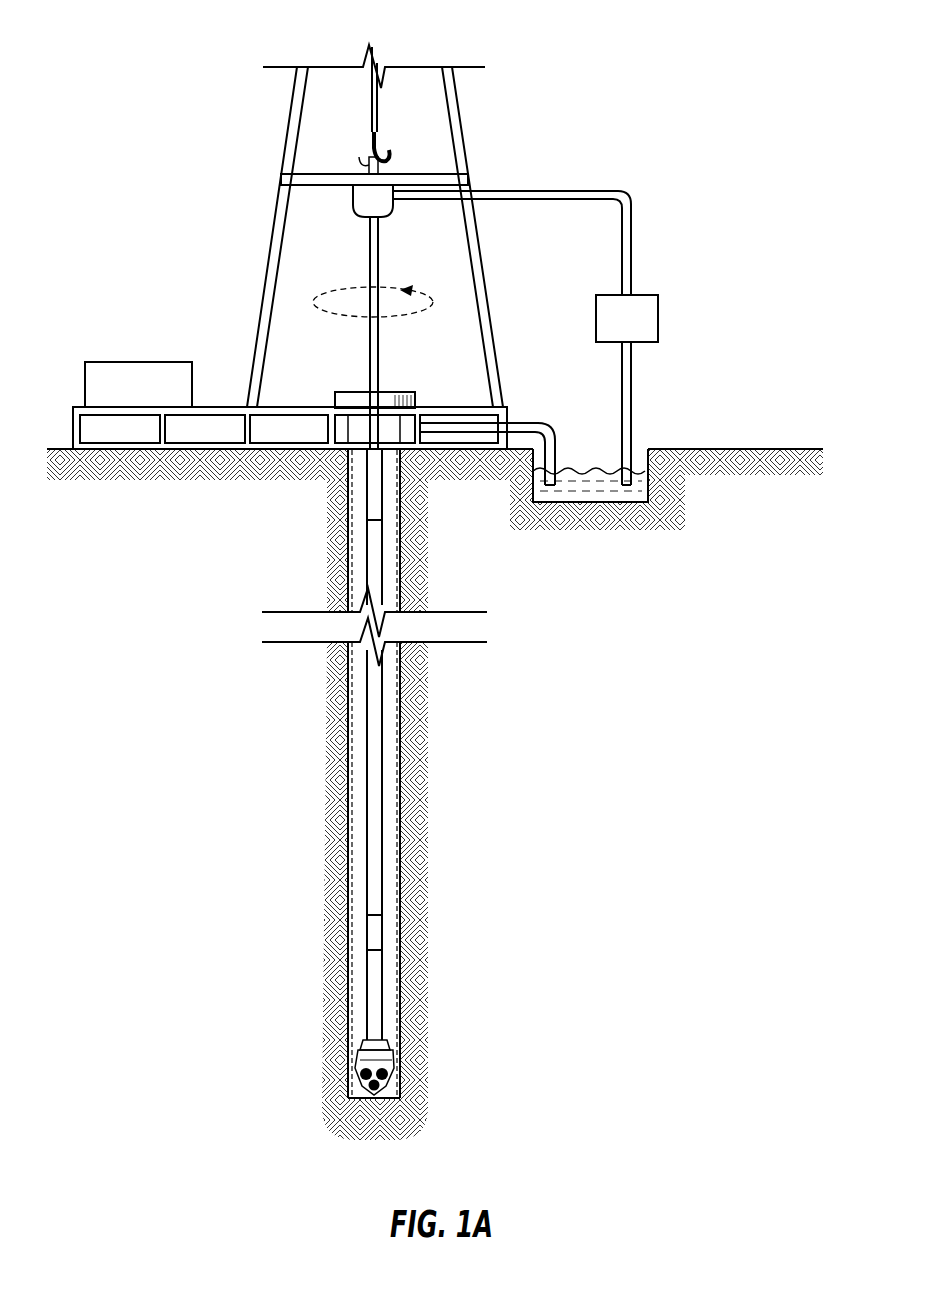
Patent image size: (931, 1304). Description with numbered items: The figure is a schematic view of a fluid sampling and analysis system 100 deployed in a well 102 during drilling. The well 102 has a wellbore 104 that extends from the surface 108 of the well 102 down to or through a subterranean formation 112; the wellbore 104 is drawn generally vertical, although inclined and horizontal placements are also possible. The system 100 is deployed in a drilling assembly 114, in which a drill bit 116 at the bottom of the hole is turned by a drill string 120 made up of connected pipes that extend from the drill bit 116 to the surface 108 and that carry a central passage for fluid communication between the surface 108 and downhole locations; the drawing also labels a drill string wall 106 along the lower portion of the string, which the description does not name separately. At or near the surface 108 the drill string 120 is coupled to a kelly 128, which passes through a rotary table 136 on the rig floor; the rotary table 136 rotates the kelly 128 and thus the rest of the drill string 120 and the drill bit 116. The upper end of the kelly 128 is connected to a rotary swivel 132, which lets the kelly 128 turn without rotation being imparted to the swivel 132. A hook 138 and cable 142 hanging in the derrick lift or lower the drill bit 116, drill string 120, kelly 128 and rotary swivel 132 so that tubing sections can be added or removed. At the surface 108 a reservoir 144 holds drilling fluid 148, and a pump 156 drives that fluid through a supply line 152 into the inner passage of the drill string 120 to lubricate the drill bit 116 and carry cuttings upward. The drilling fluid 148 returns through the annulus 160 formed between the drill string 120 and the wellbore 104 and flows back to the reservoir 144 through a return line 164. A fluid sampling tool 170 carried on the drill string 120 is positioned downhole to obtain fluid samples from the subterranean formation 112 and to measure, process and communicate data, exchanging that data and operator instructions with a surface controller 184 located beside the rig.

The fluid sampling and analysis system 100 is at (152, 47).
The well 102 is at (415, 373).
The wellbore 104 is at (350, 760).
The drill string 106 is at (396, 840).
The surface 108 is at (745, 449).
The subterranean formation 112 is at (345, 1110).
The drilling assembly 114 is at (392, 782).
The drill bit 116 is at (391, 1052).
The drill string 120 is at (367, 663).
The kelly 128 is at (370, 492).
The rotary swivel 132 is at (362, 218).
The rotary table 136 is at (348, 392).
The hook 138 is at (384, 148).
The cable 142 is at (373, 93).
The reservoir 144 is at (590, 505).
The drilling fluid 148 is at (575, 474).
The supply line 152 is at (543, 190).
The pump 156 is at (648, 295).
The annulus 160 is at (357, 784).
The return line 164 is at (523, 423).
The fluid sampling tool 170 is at (370, 933).
The surface controller 184 is at (140, 362).